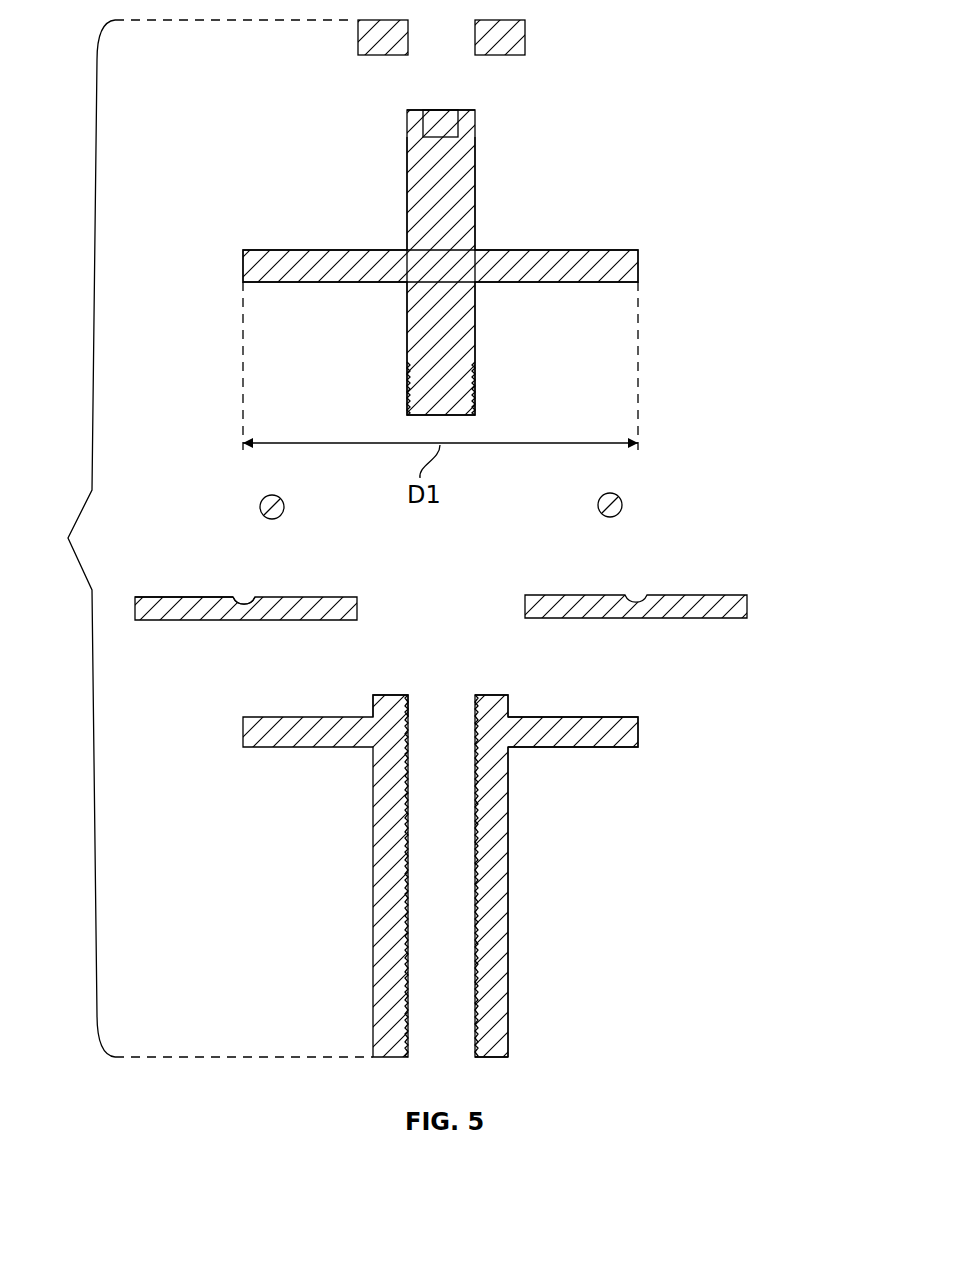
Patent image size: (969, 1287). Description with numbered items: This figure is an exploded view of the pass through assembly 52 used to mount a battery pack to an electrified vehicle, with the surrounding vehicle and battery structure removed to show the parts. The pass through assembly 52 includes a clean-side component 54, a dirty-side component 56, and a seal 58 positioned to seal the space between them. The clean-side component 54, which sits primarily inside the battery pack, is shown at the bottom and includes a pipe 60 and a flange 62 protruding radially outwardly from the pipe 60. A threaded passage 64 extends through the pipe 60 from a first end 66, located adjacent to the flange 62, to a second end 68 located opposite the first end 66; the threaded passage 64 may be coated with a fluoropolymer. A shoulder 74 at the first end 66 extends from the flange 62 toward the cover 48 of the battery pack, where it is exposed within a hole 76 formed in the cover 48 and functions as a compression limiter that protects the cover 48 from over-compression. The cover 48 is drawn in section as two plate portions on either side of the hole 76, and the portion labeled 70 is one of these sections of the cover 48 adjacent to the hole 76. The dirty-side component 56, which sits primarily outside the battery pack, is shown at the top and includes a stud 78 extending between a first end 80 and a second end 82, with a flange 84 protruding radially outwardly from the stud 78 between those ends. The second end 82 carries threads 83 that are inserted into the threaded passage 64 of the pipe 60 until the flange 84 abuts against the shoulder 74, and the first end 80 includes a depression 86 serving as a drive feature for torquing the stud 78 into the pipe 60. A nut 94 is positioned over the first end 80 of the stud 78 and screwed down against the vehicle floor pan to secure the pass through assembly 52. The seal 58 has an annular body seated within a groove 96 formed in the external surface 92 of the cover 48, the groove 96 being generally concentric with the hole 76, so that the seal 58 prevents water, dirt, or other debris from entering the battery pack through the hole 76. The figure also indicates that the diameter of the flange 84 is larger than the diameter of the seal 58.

The cover 48 is at (750, 607).
The pass through assembly 52 is at (205, 538).
The clean-side component 54 is at (441, 883).
The dirty-side component 56 is at (440, 239).
The seal 58 is at (622, 490).
The pipe 60 is at (500, 996).
The flange 62 is at (605, 740).
The threaded passage 64 is at (471, 884).
The first end 66 is at (519, 701).
The second end 68 is at (518, 1065).
The plate 70 is at (163, 620).
The shoulder 74 is at (395, 698).
The hole 76 is at (434, 607).
The stud 78 is at (467, 172).
The first end 80 is at (407, 153).
The second end 82 is at (467, 392).
The threads 83 is at (407, 395).
The flange 84 is at (580, 283).
The depression 86 is at (442, 110).
The external surface 92 is at (160, 597).
The nut 94 is at (525, 30).
The groove 96 is at (245, 605).